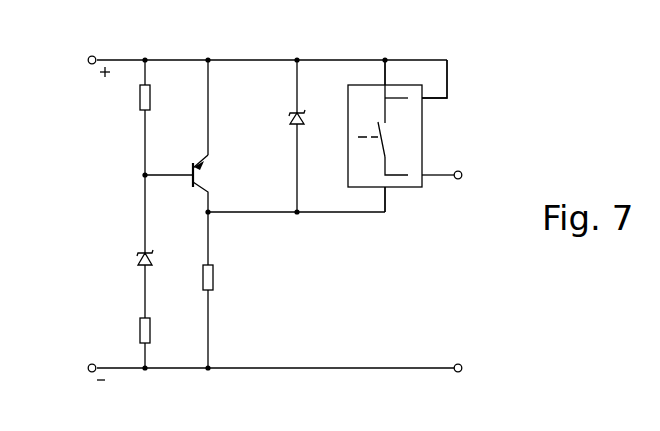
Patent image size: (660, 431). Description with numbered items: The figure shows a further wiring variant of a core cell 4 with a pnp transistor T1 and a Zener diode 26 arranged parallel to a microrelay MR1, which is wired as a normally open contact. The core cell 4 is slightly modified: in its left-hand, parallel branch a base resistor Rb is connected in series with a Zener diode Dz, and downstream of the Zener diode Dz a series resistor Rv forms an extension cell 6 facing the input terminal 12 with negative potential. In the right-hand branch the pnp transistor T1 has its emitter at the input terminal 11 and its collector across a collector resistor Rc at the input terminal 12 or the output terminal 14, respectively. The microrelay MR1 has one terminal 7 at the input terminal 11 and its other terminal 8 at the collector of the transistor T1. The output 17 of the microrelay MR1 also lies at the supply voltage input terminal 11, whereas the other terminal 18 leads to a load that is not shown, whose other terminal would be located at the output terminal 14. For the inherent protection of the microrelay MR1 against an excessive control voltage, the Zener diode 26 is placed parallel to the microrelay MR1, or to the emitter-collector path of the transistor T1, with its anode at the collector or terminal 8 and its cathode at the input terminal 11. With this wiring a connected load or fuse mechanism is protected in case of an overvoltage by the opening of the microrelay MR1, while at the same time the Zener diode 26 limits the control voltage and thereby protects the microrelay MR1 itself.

The core cell 4 is at (93, 137).
The extension cell 6 is at (93, 330).
The terminal of microrelay 7 is at (384, 53).
The terminal of microrelay 8 is at (384, 218).
The input terminal 11 is at (80, 70).
The input terminal 12 is at (76, 378).
The output terminal 14 is at (480, 378).
The output of microrelay 17 is at (457, 79).
The terminal of microrelay 18 is at (464, 184).
The Zener diode 26 is at (277, 136).
The pnp transistor T1 is at (199, 214).
The microrelay MR1 is at (410, 148).